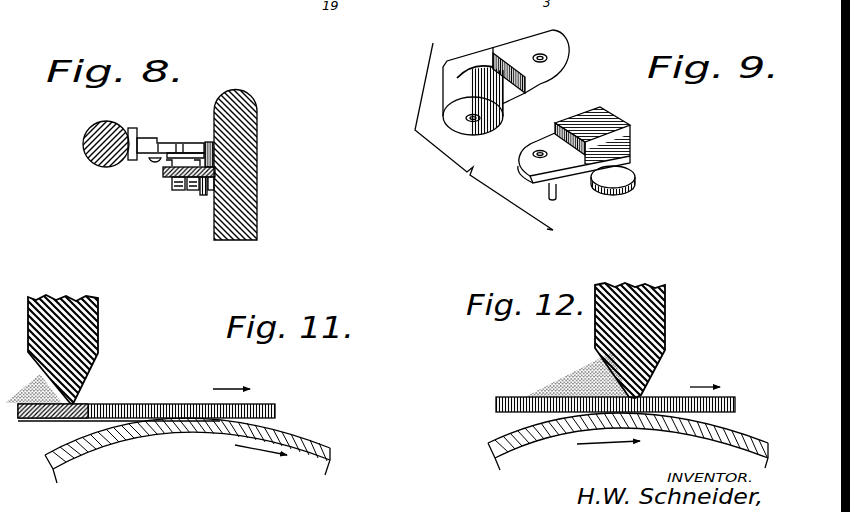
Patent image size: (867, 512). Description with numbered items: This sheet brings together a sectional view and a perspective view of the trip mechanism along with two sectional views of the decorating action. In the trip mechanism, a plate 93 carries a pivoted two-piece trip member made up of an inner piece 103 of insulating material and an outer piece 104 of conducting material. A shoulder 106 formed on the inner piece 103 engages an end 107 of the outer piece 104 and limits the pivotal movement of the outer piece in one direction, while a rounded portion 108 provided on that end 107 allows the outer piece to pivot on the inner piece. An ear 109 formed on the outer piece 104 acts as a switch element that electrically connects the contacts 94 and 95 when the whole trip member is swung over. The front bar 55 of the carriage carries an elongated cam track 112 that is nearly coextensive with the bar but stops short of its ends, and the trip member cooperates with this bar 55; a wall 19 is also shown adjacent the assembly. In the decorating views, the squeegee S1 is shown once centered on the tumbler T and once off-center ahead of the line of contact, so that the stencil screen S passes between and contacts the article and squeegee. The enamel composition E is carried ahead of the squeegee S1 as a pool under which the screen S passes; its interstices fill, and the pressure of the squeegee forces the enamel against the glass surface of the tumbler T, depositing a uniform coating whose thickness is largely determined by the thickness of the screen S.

In FIG. 8, the wall 19 is at (240, 88).
In FIG. 8, the front bar 55 is at (87, 136).
In FIG. 8, the cam track 112 is at (132, 128).
In FIG. 8, the outer piece 104 is at (150, 140).
In FIG. 9, the outer piece 104 is at (613, 124).
In FIG. 8, the inner piece 103 is at (203, 140).
In FIG. 9, the inner piece 103 is at (553, 45).
In FIG. 8, the ear 109 is at (150, 159).
In FIG. 9, the ear 109 is at (634, 172).
In FIG. 8, the plate 93 is at (167, 178).
In FIG. 8, the contact 94 is at (177, 189).
In FIG. 8, the contact 95 is at (190, 189).
In FIG. 9, the shoulder 106 is at (525, 92).
In FIG. 9, the rounded portion 108 is at (515, 158).
In FIG. 9, the end 107 is at (532, 180).
In FIG. 11, the squeegee S1 is at (99, 318).
In FIG. 12, the squeegee S1 is at (666, 301).
In FIG. 11, the stencil screen S is at (114, 404).
In FIG. 12, the stencil screen S is at (500, 398).
In FIG. 11, the tumbler T is at (125, 440).
In FIG. 12, the tumbler T is at (742, 437).
In FIG. 11, the enamel composition E is at (41, 398).
In FIG. 12, the enamel composition E is at (583, 378).